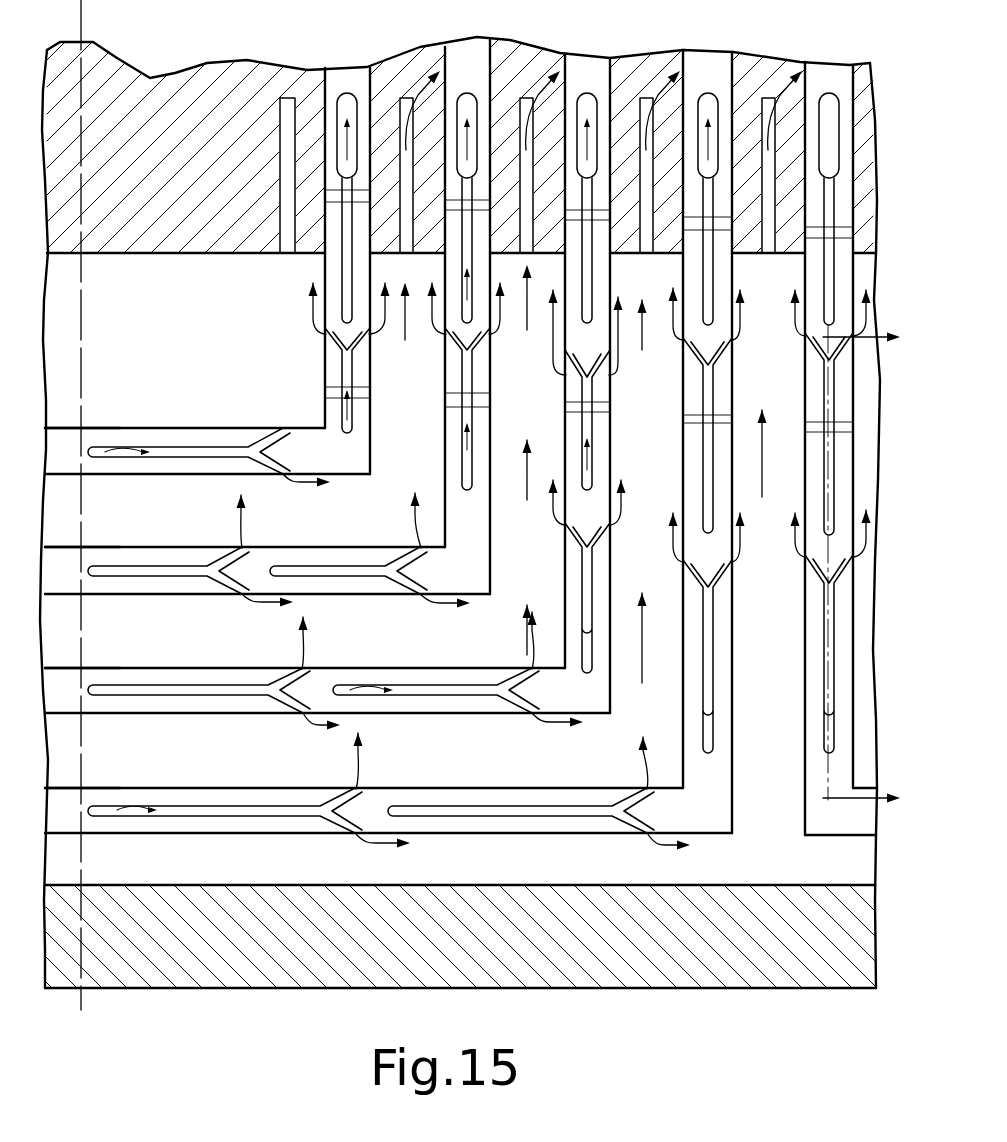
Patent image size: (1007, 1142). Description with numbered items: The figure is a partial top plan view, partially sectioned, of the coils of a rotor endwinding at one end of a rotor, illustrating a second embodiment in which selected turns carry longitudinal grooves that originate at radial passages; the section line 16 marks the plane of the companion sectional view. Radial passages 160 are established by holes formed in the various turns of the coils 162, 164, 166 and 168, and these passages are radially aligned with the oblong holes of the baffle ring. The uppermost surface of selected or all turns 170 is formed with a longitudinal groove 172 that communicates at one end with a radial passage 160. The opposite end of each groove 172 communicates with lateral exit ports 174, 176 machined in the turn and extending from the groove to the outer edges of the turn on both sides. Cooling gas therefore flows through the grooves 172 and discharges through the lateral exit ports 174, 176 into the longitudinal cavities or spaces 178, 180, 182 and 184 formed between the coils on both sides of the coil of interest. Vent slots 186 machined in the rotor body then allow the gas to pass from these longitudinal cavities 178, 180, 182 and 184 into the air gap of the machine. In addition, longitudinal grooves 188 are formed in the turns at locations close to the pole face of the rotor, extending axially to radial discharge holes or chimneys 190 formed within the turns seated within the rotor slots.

The section line 16 is at (868, 552).
The radial passage 160 is at (348, 420).
The coil 162 is at (109, 414).
The coil 164 is at (107, 544).
The coil 166 is at (115, 662).
The coil 168 is at (108, 781).
The turn 170 is at (317, 455).
The longitudinal groove 172 is at (220, 446).
The lateral exit port 174 is at (322, 347).
The lateral exit port 176 is at (363, 340).
The longitudinal cavity 178 is at (425, 430).
The longitudinal cavity 180 is at (547, 409).
The longitudinal cavity 182 is at (674, 482).
The longitudinal cavity 184 is at (780, 352).
The vent slot 186 is at (285, 105).
The longitudinal groove 188 is at (330, 212).
The radial discharge hole 190 is at (350, 93).